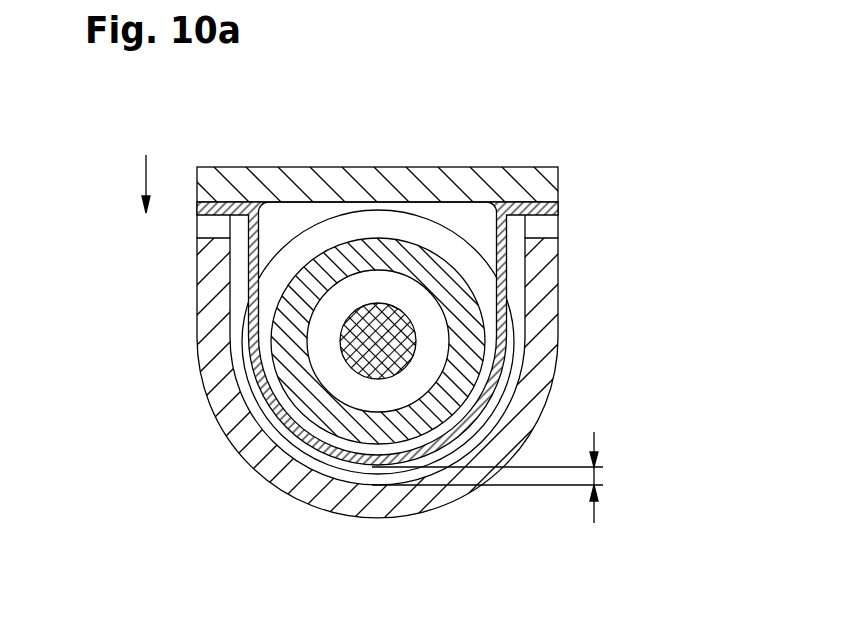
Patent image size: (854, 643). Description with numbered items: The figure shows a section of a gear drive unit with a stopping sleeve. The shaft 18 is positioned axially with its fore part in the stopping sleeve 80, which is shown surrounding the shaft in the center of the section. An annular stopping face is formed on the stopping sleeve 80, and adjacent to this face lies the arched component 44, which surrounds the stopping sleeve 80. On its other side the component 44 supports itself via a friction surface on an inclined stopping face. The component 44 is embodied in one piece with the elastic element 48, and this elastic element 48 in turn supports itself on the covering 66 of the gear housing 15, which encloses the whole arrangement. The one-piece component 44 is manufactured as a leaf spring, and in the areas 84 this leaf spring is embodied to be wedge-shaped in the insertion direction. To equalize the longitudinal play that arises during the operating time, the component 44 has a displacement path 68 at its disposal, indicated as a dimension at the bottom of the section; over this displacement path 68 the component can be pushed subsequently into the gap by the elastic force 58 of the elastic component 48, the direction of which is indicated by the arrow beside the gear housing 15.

The gear housing 15 is at (272, 472).
The covering 66 is at (498, 178).
The elastic force 58 is at (146, 175).
The elastic element 48 is at (558, 227).
The areas 84 is at (250, 322).
The component 44 is at (498, 370).
The stopping sleeve 80 is at (470, 314).
The shaft 18 is at (350, 353).
The displacement path 68 is at (603, 478).